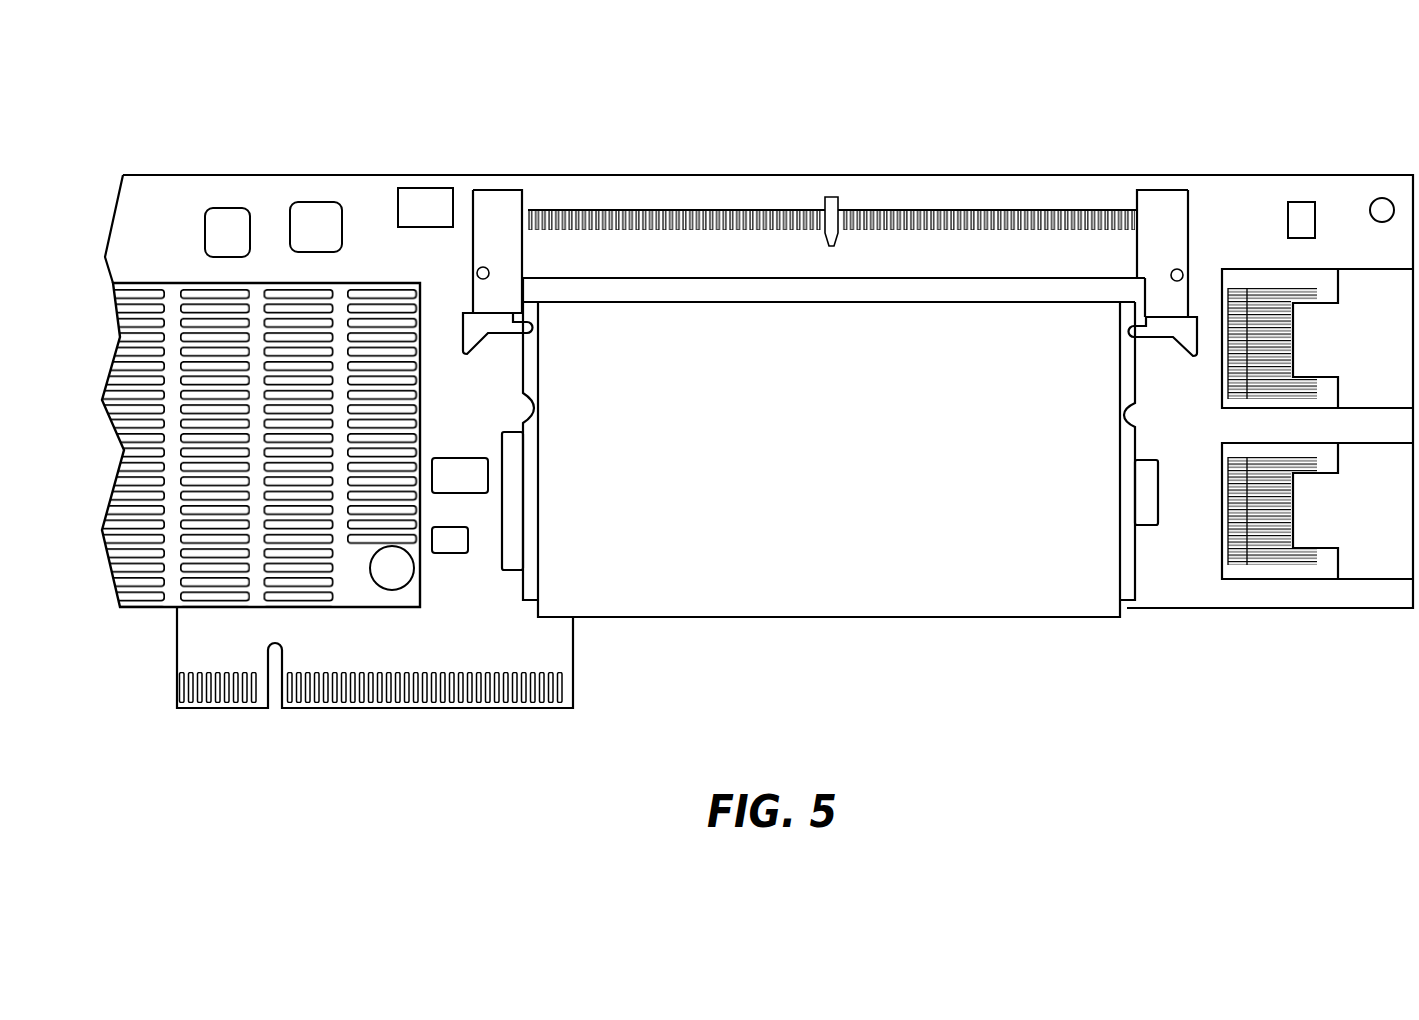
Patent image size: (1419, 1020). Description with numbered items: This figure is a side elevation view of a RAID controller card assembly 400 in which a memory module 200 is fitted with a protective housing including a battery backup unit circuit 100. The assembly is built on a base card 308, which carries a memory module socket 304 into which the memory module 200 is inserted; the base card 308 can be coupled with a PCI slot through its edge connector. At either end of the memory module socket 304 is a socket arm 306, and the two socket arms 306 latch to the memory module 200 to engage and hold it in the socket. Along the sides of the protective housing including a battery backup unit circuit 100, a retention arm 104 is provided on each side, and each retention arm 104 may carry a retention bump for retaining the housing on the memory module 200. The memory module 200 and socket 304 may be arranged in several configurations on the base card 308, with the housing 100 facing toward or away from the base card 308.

The host bus adapter card assembly 400 is at (546, 84).
The memory module socket 304 is at (667, 245).
The socket arm 306 is at (497, 322).
The base card 308 is at (1116, 197).
The memory module 200 is at (817, 586).
The protective housing including a battery backup unit circuit 100 is at (982, 580).
The retention arm 104 is at (513, 533).